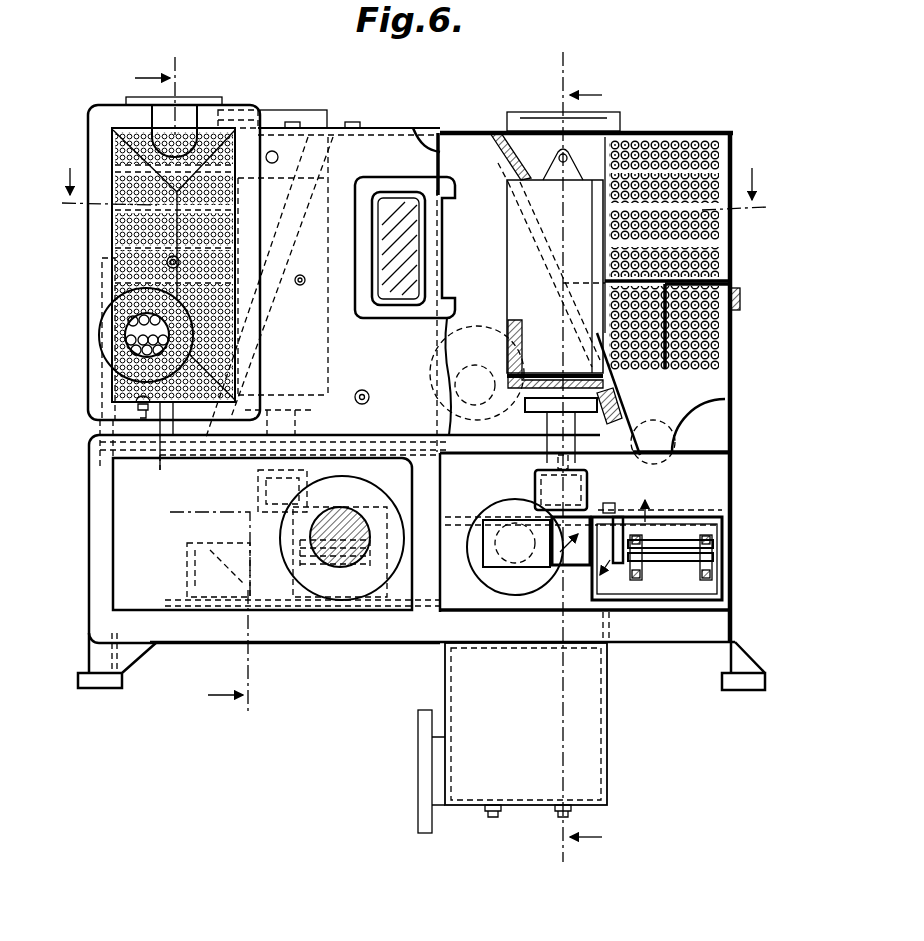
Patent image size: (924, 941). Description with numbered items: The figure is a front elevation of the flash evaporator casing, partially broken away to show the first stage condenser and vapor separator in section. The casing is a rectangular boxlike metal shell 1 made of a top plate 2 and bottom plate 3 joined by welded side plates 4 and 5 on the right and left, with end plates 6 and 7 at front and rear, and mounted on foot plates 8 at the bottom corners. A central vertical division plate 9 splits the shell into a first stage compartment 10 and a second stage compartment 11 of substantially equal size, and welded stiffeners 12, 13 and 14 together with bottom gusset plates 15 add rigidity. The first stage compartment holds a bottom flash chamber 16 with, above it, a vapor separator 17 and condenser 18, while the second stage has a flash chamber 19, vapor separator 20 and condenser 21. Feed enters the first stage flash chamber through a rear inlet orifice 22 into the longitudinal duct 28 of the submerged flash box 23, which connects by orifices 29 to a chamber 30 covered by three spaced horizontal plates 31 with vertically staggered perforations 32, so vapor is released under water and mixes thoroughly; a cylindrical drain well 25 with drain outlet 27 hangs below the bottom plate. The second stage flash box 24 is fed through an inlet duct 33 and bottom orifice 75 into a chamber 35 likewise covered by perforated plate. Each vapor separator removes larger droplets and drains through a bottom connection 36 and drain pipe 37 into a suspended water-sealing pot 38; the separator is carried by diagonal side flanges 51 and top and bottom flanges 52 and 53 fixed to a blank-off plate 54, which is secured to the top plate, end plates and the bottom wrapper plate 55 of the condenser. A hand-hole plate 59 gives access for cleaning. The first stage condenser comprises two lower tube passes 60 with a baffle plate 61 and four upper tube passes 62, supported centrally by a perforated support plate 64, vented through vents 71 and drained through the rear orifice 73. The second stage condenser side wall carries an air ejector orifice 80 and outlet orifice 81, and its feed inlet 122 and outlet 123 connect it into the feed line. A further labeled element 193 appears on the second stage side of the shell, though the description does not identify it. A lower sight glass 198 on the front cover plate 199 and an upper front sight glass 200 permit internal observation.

The metal shell 1 is at (720, 525).
The top plate 2 is at (368, 128).
The bottom plate 3 is at (656, 625).
The side plate 4 is at (727, 600).
The side plate 5 is at (110, 424).
The end plate 6 is at (378, 405).
The end plate 7 is at (740, 560).
The foot plates 8 is at (740, 705).
The central vertical division plate 9 is at (434, 152).
The first stage compartment 10 is at (725, 387).
The second stage compartment 11 is at (127, 155).
The top stiffener 12 is at (620, 137).
The side stiffener 13 is at (490, 440).
The bottom stiffener 14 is at (523, 635).
The bottom gusset plates 15 is at (428, 632).
The first stage flash chamber 16 is at (715, 490).
The vapor separator 17 is at (545, 247).
The first stage condenser 18 is at (722, 157).
The second stage flash chamber 19 is at (128, 565).
The vapor separator 20 is at (320, 312).
The second stage condenser 21 is at (250, 118).
The rear inlet orifice 22 is at (497, 563).
The flash box 23 is at (652, 535).
The flash box 24 is at (357, 590).
The drain well 25 is at (595, 733).
The drain outlet 27 is at (422, 780).
The longitudinal duct 28 is at (584, 566).
The orifices 29 is at (640, 520).
The chamber 30 is at (643, 590).
The horizontal plates 31 is at (757, 540).
The perforations 32 is at (668, 578).
The inlet duct 33 is at (197, 568).
The chamber 35 is at (290, 605).
The bottom connection 36 is at (314, 400).
The drain pipe 37 is at (250, 460).
The water-sealing pot 38 is at (537, 480).
The diagonal side flanges 51 is at (262, 305).
The top flange 52 is at (288, 168).
The bottom flange 53 is at (250, 408).
The blank-off plate 54 is at (306, 225).
The bottom wrapper plate 55 is at (215, 455).
The hand-hole plate 59 is at (305, 122).
The lower tube passes 60 is at (718, 357).
The baffle plate 61 is at (687, 341).
The upper tube passes 62 is at (672, 178).
The perforated support plate 64 is at (720, 263).
The vents 71 is at (742, 300).
The rear orifice 73 is at (683, 432).
The bottom orifice 75 is at (243, 612).
The air ejector orifice 80 is at (100, 300).
The outlet orifice 81 is at (100, 447).
The feed inlet 122 is at (128, 335).
The outlet 123 is at (183, 108).
The shaft 193 is at (133, 263).
The lower sight glass 198 is at (357, 540).
The front cover plate 199 is at (392, 618).
The upper front sight glass 200 is at (410, 240).